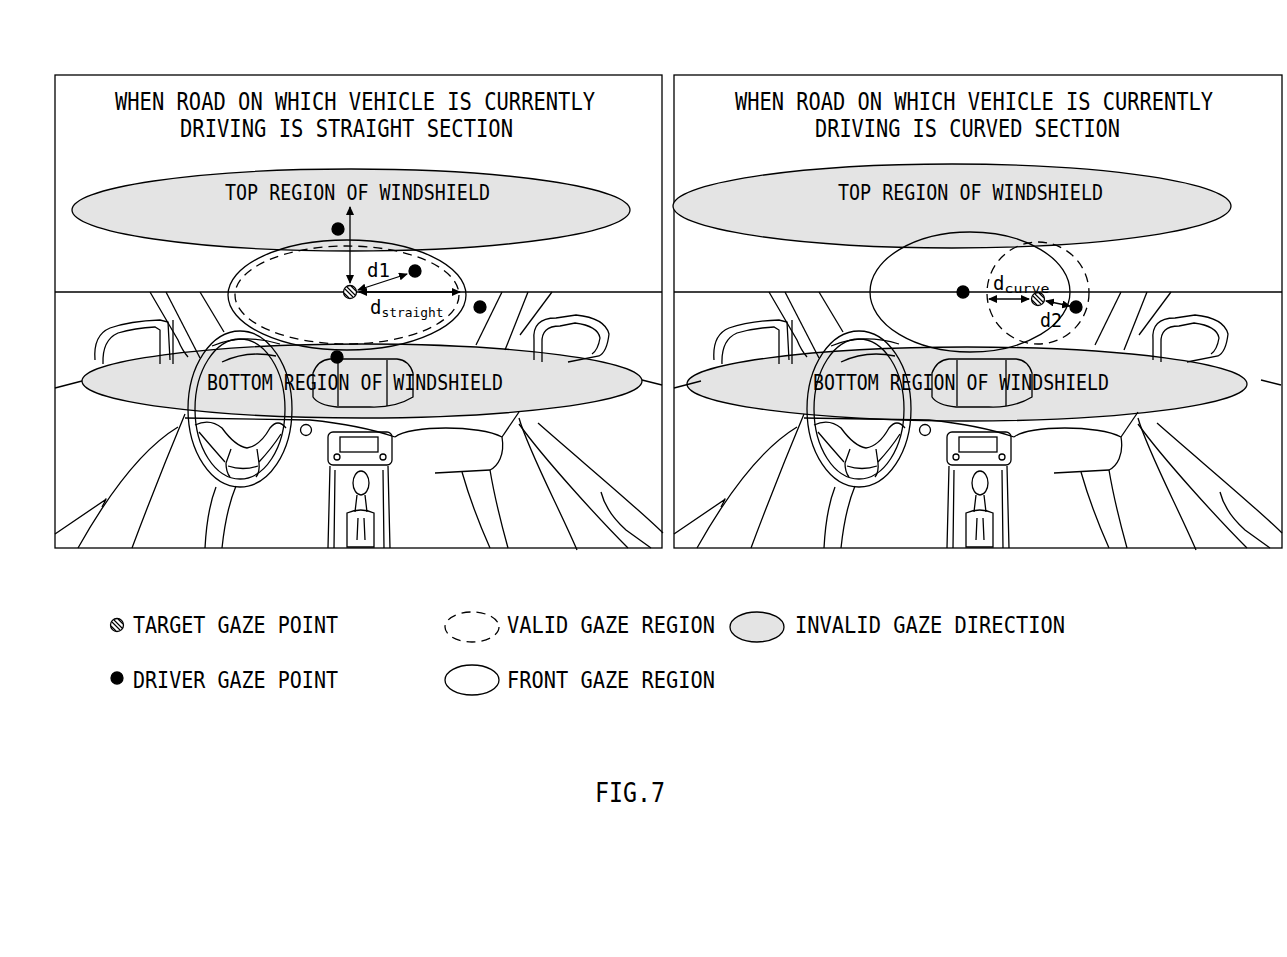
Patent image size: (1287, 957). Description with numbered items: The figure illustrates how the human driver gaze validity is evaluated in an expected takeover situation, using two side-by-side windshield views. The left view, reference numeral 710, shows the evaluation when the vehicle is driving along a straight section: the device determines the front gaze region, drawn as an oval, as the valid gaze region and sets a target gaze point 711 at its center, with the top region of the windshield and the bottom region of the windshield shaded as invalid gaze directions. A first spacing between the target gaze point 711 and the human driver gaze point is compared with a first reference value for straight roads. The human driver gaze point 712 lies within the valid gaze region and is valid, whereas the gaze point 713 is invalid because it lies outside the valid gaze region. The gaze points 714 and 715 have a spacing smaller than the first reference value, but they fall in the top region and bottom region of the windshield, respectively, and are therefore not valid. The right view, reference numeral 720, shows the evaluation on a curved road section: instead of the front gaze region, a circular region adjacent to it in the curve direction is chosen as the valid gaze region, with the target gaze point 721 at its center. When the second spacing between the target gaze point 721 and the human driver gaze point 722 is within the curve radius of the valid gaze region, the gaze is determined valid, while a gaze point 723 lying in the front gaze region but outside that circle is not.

The straight section gaze validity evaluation 710 is at (359, 73).
The target gaze point 711 is at (343, 289).
The valid human driver gaze point case 712 is at (421, 270).
The invalid human driver gaze point case outside valid gaze region 713 is at (484, 304).
The invalid human driver gaze point case in top region of windshield 714 is at (332, 229).
The invalid human driver gaze point case in bottom region of windshield 715 is at (334, 352).
The curved section gaze validity evaluation 720 is at (976, 73).
The target gaze point 721 is at (1082, 276).
The human driver gaze point 722 is at (1082, 305).
The driver gaze point in front gaze region 723 is at (958, 289).